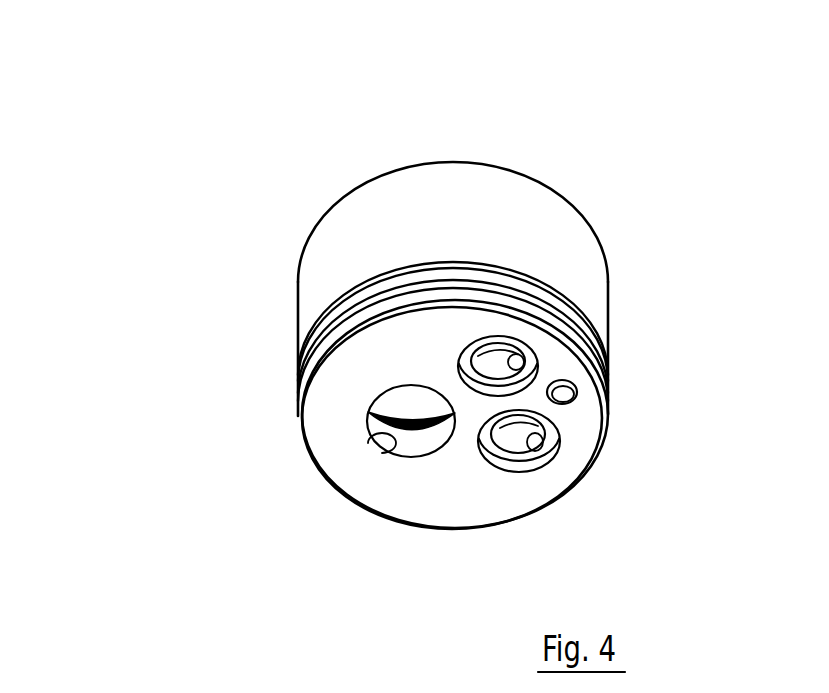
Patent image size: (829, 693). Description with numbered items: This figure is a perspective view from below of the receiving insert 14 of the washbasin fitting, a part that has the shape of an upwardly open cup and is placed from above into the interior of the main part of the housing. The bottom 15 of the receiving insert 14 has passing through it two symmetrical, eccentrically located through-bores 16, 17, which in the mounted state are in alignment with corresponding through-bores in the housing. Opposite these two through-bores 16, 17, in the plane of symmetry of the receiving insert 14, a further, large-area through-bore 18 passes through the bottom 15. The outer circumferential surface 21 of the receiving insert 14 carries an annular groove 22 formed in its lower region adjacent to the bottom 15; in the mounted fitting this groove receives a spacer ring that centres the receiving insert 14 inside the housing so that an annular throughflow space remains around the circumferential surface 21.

The receiving insert 14 is at (250, 282).
The bottom 15 is at (487, 487).
The through-bore 16 is at (536, 368).
The through-bore 17 is at (540, 458).
The large-area through-bore 18 is at (367, 438).
The circumferential surface 21 is at (543, 240).
The annular groove 22 is at (425, 280).